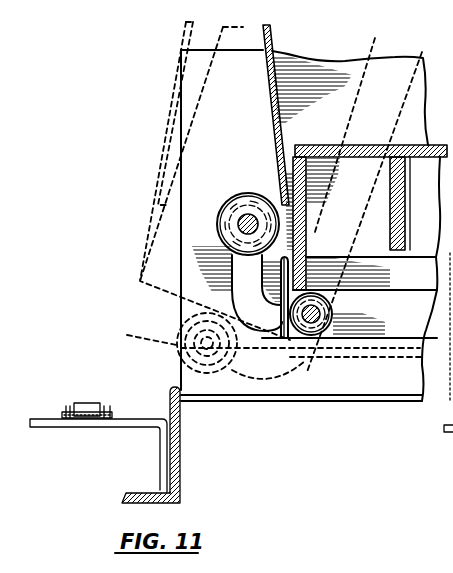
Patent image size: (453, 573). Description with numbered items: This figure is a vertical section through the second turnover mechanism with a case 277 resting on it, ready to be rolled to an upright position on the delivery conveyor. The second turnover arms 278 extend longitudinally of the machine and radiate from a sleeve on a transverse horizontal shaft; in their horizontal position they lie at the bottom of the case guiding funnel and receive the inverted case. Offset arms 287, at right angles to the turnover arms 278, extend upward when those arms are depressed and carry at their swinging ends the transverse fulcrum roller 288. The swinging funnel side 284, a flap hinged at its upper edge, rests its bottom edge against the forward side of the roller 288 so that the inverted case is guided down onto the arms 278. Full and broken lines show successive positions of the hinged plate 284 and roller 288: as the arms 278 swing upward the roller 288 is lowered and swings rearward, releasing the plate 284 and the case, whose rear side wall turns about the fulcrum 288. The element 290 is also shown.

The case 277 is at (263, 31).
The second turnover arms 278 is at (425, 50).
The swinging transverse funnel side 284 is at (263, 88).
The offset arms 287 is at (248, 285).
The fulcrum roller 288 is at (248, 193).
The clip 290 is at (83, 402).